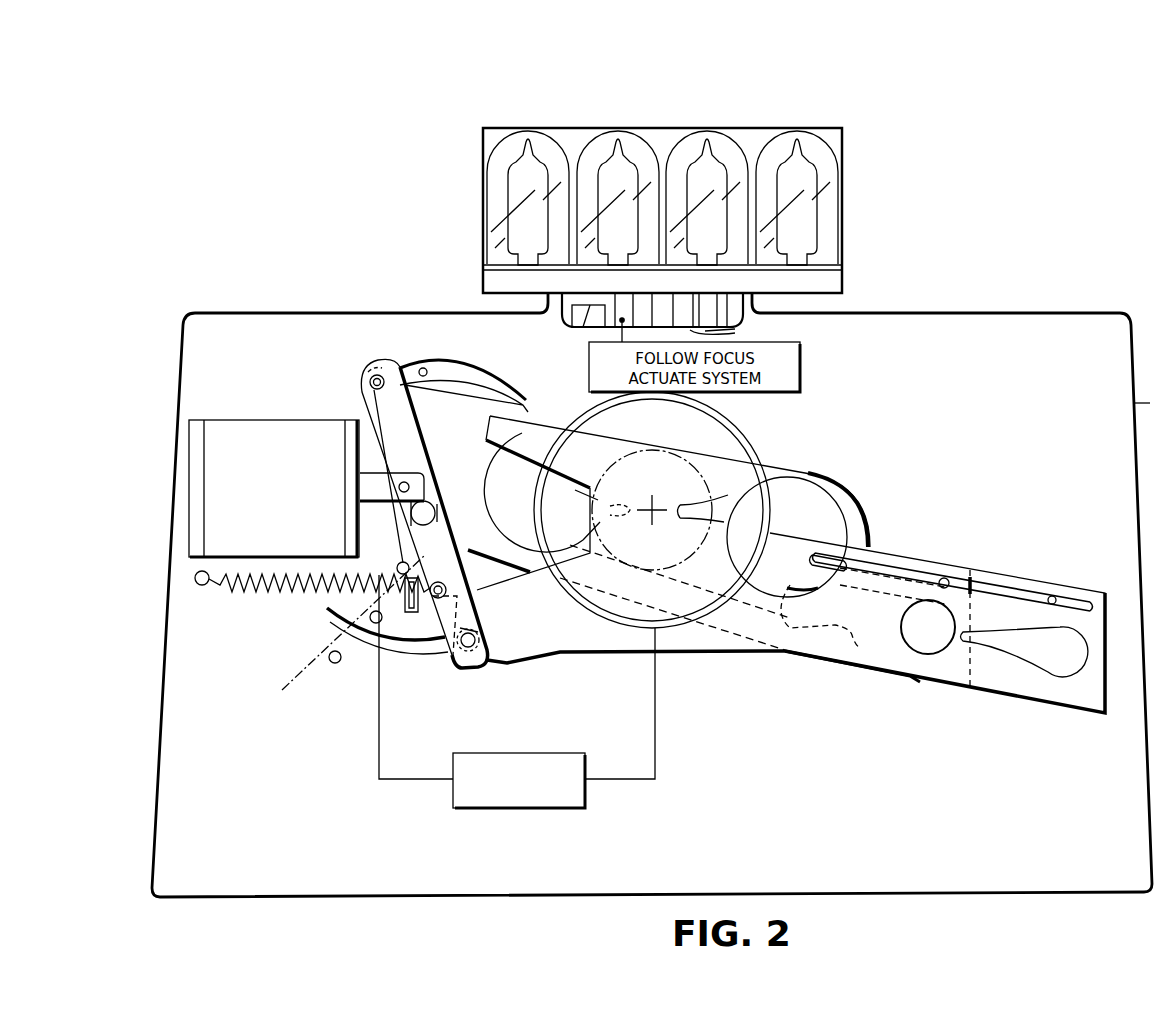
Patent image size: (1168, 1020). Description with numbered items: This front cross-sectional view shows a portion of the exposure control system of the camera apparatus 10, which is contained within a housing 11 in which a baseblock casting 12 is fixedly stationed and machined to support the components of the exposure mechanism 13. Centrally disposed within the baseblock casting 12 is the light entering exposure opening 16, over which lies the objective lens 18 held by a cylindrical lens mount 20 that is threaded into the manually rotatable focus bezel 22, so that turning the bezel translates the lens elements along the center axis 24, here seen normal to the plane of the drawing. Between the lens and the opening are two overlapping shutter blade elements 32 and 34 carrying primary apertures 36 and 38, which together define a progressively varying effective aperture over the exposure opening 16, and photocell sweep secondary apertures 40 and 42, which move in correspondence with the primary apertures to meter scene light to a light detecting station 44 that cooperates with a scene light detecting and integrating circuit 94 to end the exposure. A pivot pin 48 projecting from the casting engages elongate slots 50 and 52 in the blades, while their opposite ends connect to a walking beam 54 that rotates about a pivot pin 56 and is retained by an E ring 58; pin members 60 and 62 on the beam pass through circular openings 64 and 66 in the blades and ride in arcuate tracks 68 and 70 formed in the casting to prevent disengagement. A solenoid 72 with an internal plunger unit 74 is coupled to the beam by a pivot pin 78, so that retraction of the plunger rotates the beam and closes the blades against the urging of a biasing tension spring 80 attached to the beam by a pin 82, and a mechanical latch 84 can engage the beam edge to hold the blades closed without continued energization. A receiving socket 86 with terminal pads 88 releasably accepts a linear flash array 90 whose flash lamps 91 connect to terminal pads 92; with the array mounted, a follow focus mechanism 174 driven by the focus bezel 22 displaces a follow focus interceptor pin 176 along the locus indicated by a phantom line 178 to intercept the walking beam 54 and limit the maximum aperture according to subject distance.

The camera apparatus 10 is at (1075, 298).
The housing 11 is at (1151, 403).
The baseblock casting 12 is at (796, 554).
The exposure mechanism 13 is at (792, 456).
The light entering exposure opening 16 is at (670, 556).
The objective lens 18 is at (652, 521).
The lens mount 20 is at (735, 442).
The focus bezel 22 is at (763, 537).
The center axis 24 is at (652, 521).
The shutter blade element 32 is at (464, 374).
The shutter blade element 34 is at (705, 652).
The primary aperture 36 is at (460, 482).
The primary aperture 38 is at (735, 565).
The photocell sweep secondary aperture 40 is at (838, 630).
The photocell sweep secondary aperture 42 is at (1060, 668).
The light detecting station 44 is at (932, 638).
The pivot pin 48 is at (948, 576).
The elongate slot 50 is at (895, 572).
The elongate slot 52 is at (953, 610).
The walking beam 54 is at (426, 510).
The pivot pin 56 is at (432, 500).
The E ring 58 is at (428, 466).
The pin member 60 is at (370, 380).
The pin member 62 is at (470, 650).
The circular opening 64 is at (376, 373).
The circular opening 66 is at (482, 633).
The arcuate track 68 is at (424, 368).
The arcuate track 70 is at (362, 623).
The solenoid 72 is at (237, 421).
The plunger unit 74 is at (392, 515).
The pivot pin 78 is at (405, 482).
The biasing tension spring 80 is at (258, 592).
The pin 82 is at (438, 581).
The mechanical latch 84 is at (412, 612).
The receiving socket 86 is at (657, 306).
The terminal pads 88 is at (728, 329).
The linear flash array 90 is at (672, 174).
The flash lamps 91 is at (790, 128).
The terminal pads 92 is at (710, 300).
The scene light detecting and integrating circuit 94 is at (580, 326).
The follow focus mechanism 174 is at (524, 808).
The follow focus interceptor pin 176 is at (329, 619).
The phantom line 178 is at (350, 650).